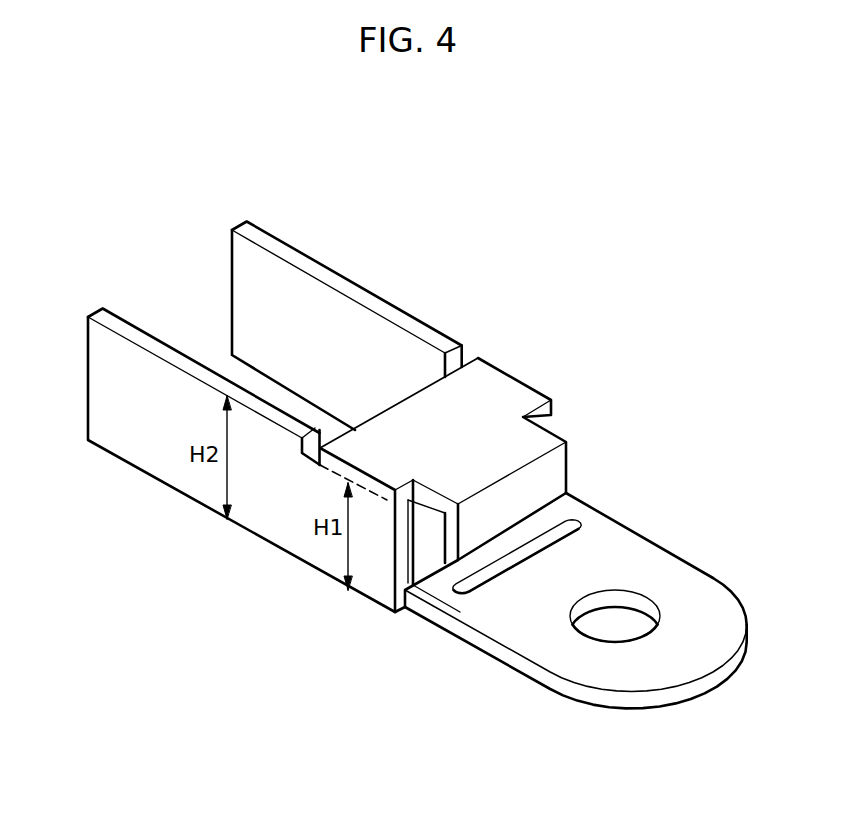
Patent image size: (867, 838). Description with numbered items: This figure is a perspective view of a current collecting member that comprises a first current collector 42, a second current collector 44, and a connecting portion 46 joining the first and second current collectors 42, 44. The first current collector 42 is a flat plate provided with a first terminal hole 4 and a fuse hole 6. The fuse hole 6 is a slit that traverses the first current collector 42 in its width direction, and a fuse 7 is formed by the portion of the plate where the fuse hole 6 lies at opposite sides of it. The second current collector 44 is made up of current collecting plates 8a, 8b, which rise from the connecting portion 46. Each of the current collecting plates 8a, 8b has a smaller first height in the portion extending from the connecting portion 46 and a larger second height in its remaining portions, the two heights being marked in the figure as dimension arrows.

The first terminal hole 4 is at (627, 598).
The fuse hole 6 is at (572, 527).
The fuse 7 is at (590, 515).
The current collecting plate 8a is at (137, 326).
The current collecting plate 8b is at (233, 258).
The first current collector 42 is at (568, 667).
The second current collector 44 is at (158, 152).
The connecting portion 46 is at (432, 500).